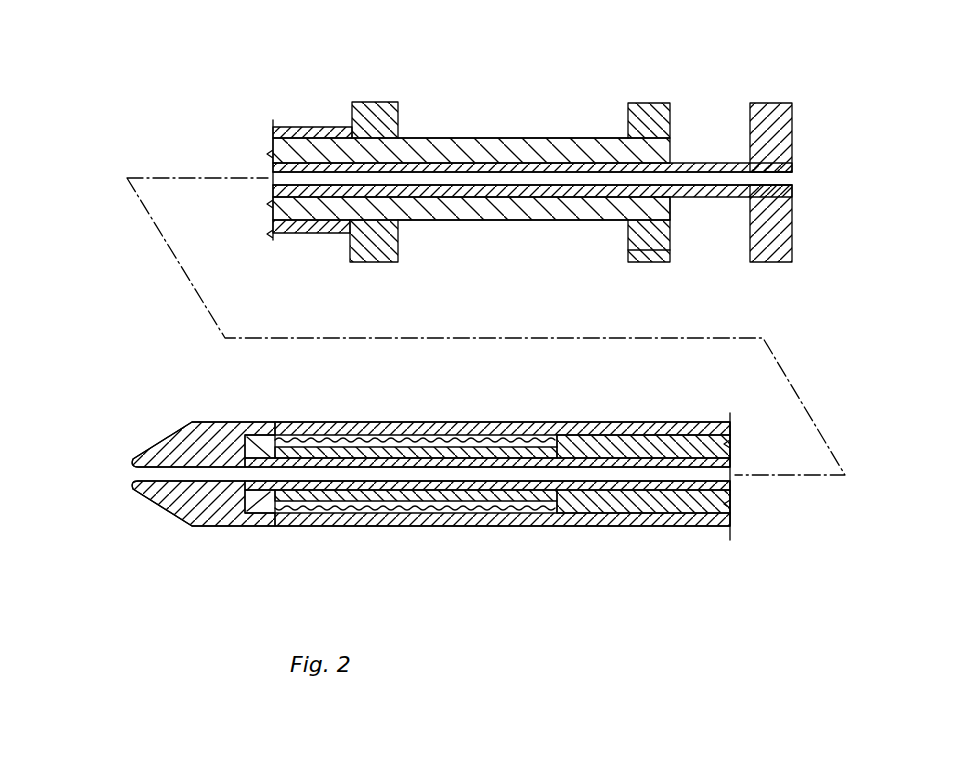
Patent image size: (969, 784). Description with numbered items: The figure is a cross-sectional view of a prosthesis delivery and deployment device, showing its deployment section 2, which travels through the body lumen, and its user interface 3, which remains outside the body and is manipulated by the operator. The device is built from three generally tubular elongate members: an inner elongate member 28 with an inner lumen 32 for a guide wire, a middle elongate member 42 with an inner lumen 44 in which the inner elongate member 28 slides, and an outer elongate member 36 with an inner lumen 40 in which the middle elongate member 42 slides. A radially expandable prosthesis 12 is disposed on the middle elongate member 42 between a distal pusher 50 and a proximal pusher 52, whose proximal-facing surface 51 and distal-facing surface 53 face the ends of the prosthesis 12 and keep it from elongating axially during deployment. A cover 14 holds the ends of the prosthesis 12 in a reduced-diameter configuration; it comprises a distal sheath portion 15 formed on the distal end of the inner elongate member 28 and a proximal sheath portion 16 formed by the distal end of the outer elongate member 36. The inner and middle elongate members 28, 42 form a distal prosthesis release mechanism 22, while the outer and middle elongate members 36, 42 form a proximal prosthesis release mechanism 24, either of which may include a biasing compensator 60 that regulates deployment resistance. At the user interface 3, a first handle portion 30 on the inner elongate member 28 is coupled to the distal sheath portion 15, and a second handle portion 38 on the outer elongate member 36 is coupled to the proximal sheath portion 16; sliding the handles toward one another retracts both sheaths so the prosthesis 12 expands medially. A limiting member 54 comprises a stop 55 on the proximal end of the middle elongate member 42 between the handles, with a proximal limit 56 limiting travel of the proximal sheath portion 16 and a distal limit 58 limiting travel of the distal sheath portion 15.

The deployment section 2 is at (593, 537).
The user interface 3 is at (633, 35).
The radially expandable prosthesis 12 is at (450, 440).
The cover 14 is at (178, 0).
The distal sheath portion 15 is at (310, 428).
The proximal sheath portion 16 is at (405, 440).
The distal prosthesis release mechanism 22 is at (732, 97).
The proximal prosthesis release mechanism 24 is at (412, 92).
The inner elongate member 28 is at (445, 170).
The first handle portion 30 is at (773, 262).
The inner lumen 32 is at (115, 0).
The outer elongate member 36 is at (313, 230).
The second handle portion 38 is at (398, 248).
The inner lumen 40 is at (342, 213).
The middle elongate member 42 is at (510, 215).
The inner lumen 44 is at (292, 170).
The distal pusher 50 is at (255, 440).
The proximal-facing surface 51 is at (282, 520).
The proximal pusher 52 is at (575, 438).
The distal-facing surface 53 is at (552, 447).
The limiting member 54 is at (693, 113).
The stop 55 is at (660, 250).
The proximal limit 56 is at (628, 247).
The distal limit 58 is at (668, 212).
The biasing compensator 60 is at (540, 138).